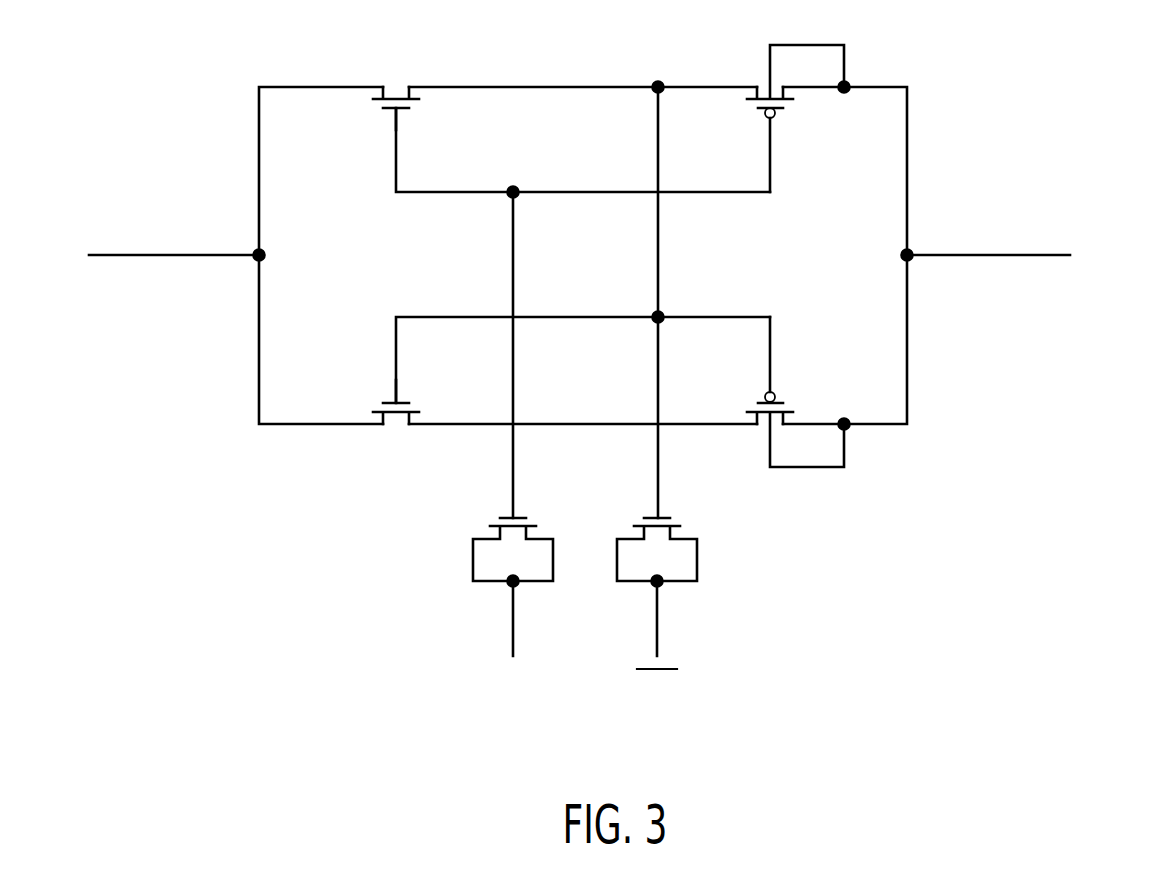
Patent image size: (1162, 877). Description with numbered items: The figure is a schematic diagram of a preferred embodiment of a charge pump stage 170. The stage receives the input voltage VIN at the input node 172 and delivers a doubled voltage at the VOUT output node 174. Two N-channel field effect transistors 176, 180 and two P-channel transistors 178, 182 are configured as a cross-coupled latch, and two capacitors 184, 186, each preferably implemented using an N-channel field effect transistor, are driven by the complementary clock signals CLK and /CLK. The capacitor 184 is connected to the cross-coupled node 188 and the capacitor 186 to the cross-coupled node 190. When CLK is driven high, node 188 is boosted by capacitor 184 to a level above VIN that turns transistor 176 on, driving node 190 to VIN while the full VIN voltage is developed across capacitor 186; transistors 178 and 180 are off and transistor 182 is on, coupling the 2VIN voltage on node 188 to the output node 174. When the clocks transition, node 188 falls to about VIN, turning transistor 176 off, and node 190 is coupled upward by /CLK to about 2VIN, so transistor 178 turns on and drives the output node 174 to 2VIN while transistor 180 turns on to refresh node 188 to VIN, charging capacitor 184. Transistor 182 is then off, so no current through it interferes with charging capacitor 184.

The charge pump stage 170 is at (1033, 609).
The input node 172 is at (166, 254).
The VOUT output node 174 is at (981, 255).
The N-channel field effect transistor 176 is at (418, 107).
The P-channel transistor 178 is at (794, 107).
The N-channel field effect transistor 180 is at (378, 405).
The P-channel transistor 182 is at (790, 405).
The capacitor 184 is at (493, 519).
The capacitor 186 is at (673, 519).
The cross-coupled node 188 is at (510, 245).
The cross-coupled node 190 is at (661, 245).